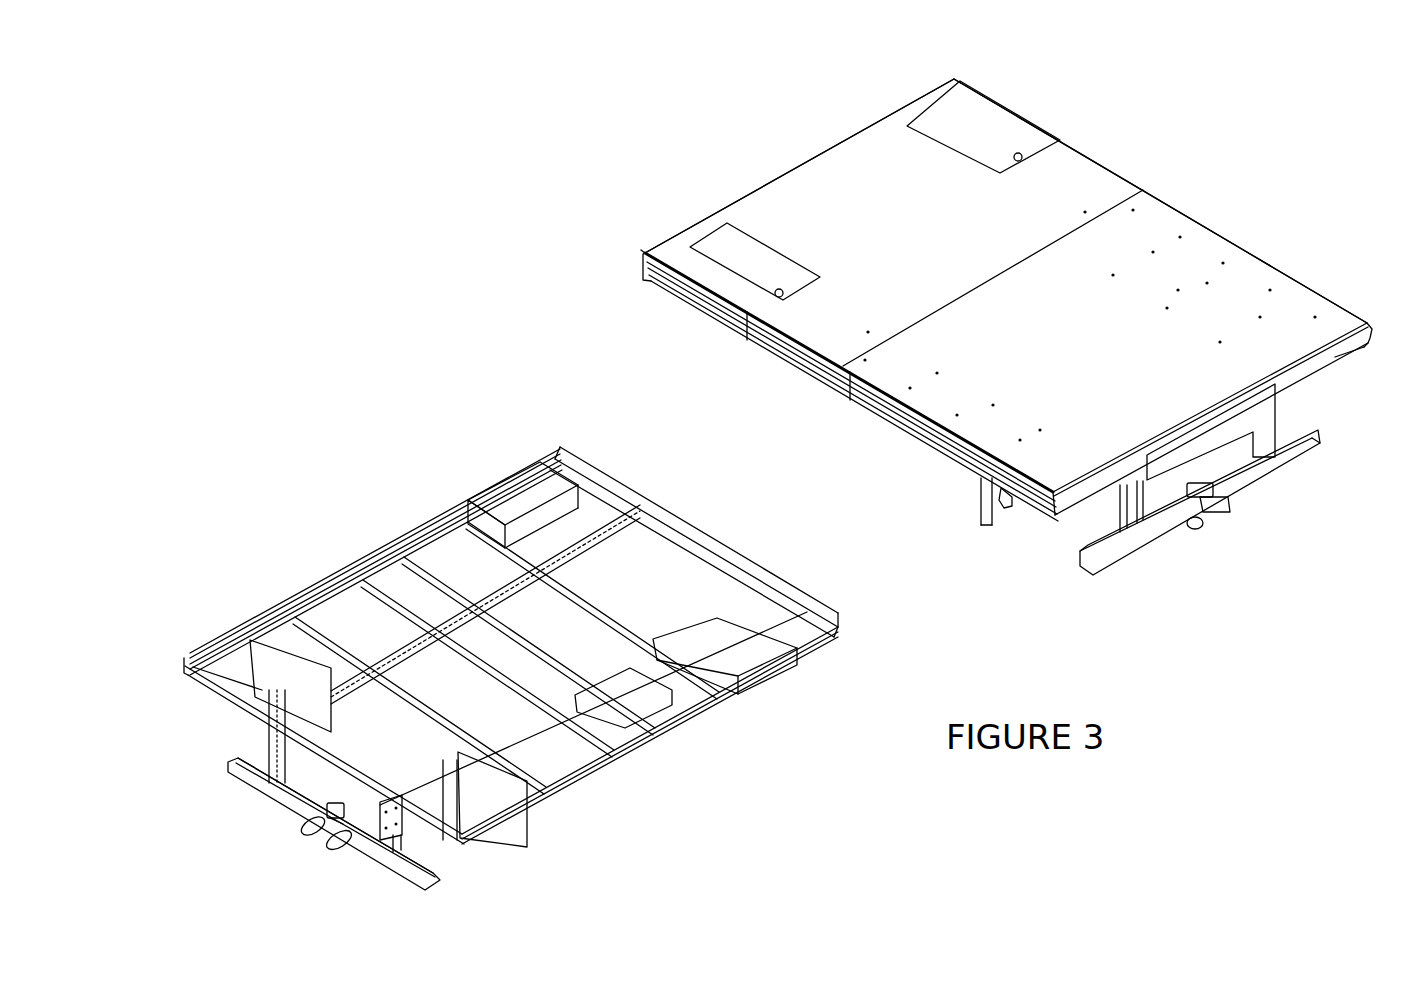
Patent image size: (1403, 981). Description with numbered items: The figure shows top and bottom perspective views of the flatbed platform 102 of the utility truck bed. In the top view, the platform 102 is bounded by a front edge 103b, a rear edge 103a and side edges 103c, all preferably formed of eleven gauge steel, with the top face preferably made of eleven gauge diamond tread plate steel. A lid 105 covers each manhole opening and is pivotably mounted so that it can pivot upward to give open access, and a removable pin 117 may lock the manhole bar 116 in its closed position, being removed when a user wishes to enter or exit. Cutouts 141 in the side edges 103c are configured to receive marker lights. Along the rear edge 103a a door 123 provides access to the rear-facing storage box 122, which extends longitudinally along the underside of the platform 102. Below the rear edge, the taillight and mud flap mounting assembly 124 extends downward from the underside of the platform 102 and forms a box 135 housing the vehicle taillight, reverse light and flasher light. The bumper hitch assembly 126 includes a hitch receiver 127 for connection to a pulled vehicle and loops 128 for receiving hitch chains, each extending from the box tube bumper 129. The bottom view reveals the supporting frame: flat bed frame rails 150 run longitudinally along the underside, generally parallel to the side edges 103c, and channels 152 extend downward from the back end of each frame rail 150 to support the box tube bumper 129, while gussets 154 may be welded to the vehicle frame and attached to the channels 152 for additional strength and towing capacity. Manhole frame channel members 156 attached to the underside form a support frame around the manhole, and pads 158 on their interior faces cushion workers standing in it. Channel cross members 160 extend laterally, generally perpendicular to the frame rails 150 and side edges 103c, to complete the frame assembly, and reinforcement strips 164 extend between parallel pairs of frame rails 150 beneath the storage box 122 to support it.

The flatbed platform 102 is at (1034, 321).
The rear edge 103a is at (1336, 356).
The front edge 103b is at (862, 130).
The side edges 103c is at (1108, 174).
The lid 105 is at (705, 264).
The manhole bar 116 is at (717, 305).
The removable pin 117 is at (747, 335).
The cutouts 141 is at (856, 395).
The storage box 122 is at (356, 737).
The door 123 is at (1257, 408).
The taillight and mud flap mounting assembly 124 is at (982, 503).
The bumper hitch assembly 126 is at (1202, 555).
The hitch receiver 127 is at (1215, 518).
The loops 128 is at (1195, 535).
The box tube bumper 129 is at (1270, 467).
The box 135 is at (1010, 507).
The flat bed frame rails 150 is at (465, 617).
The channels 152 is at (273, 760).
The gussets 154 is at (410, 817).
The manhole frame channel members 156 is at (558, 522).
The pads 158 is at (777, 648).
The channel cross members 160 is at (597, 732).
The reinforcement strips 164 is at (562, 665).